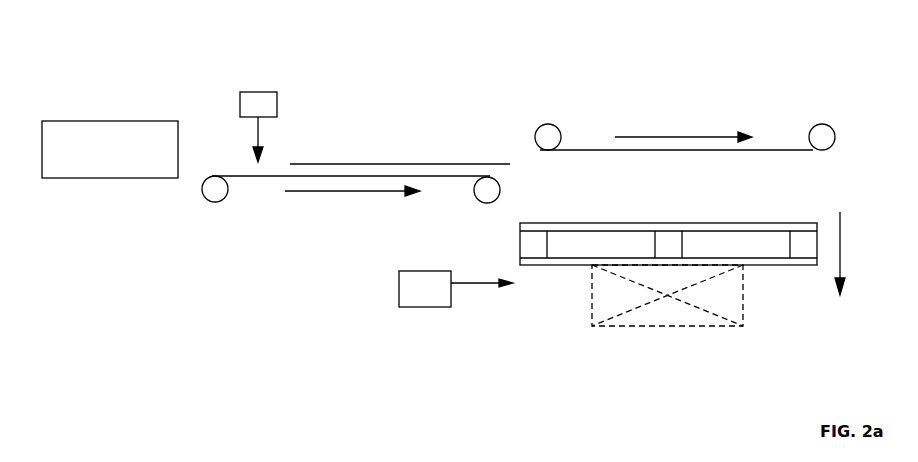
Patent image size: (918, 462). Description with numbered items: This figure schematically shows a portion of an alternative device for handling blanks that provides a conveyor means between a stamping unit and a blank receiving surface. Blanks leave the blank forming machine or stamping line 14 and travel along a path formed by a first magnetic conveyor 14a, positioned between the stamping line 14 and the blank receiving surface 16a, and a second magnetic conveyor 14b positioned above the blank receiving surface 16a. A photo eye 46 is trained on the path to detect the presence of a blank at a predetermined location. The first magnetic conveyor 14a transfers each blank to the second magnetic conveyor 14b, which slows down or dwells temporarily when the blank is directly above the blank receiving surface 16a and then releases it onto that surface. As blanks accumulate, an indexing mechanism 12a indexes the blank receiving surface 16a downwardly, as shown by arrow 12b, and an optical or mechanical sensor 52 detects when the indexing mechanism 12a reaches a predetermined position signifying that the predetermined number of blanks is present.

The blank forming machine 14 is at (117, 121).
The first magnetic conveyor 14a is at (240, 176).
The second magnetic conveyor 14b is at (608, 150).
The photo eye 46 is at (273, 92).
The optical or mechanical sensor 52 is at (399, 299).
The blank receiving surface 16a is at (760, 231).
The indexing mechanism 12a is at (592, 306).
The arrow 12b is at (857, 253).